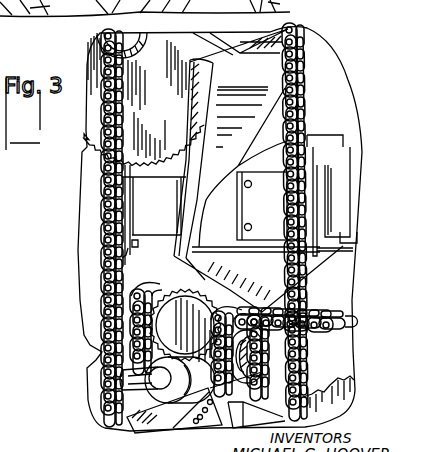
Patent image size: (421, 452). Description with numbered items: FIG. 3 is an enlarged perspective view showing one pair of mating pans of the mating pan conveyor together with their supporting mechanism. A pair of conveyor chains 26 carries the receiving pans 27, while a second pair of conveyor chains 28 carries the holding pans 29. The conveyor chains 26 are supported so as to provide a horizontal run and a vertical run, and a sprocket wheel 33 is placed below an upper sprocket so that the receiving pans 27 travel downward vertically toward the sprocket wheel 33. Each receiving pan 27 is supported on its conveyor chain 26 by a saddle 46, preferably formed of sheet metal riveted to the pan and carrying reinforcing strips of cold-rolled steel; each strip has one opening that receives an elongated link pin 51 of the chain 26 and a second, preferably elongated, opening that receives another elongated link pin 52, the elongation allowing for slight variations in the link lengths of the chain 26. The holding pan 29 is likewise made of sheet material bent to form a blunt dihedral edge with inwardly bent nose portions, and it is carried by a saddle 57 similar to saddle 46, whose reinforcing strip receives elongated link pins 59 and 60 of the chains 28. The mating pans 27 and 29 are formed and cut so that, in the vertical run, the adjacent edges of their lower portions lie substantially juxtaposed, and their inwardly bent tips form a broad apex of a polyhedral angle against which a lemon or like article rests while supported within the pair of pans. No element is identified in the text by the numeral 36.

The conveyor chains 26 is at (101, 207).
The receiving pans 27 is at (247, 100).
The conveyor chains 28 is at (307, 96).
The holding pans 29 is at (353, 150).
The sprocket wheel 33 is at (172, 338).
The chain 36 is at (330, 391).
The saddle 46 is at (155, 230).
The link pin 51 is at (122, 258).
The link pin 52 is at (128, 200).
The saddle 57 is at (267, 190).
The link pin 59 is at (334, 191).
The link pin 60 is at (303, 265).